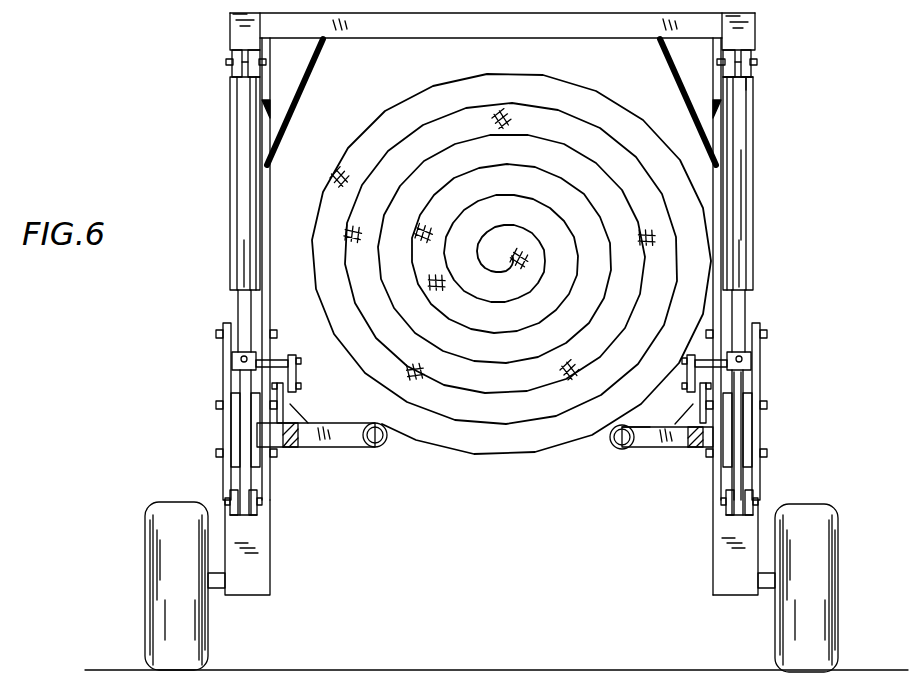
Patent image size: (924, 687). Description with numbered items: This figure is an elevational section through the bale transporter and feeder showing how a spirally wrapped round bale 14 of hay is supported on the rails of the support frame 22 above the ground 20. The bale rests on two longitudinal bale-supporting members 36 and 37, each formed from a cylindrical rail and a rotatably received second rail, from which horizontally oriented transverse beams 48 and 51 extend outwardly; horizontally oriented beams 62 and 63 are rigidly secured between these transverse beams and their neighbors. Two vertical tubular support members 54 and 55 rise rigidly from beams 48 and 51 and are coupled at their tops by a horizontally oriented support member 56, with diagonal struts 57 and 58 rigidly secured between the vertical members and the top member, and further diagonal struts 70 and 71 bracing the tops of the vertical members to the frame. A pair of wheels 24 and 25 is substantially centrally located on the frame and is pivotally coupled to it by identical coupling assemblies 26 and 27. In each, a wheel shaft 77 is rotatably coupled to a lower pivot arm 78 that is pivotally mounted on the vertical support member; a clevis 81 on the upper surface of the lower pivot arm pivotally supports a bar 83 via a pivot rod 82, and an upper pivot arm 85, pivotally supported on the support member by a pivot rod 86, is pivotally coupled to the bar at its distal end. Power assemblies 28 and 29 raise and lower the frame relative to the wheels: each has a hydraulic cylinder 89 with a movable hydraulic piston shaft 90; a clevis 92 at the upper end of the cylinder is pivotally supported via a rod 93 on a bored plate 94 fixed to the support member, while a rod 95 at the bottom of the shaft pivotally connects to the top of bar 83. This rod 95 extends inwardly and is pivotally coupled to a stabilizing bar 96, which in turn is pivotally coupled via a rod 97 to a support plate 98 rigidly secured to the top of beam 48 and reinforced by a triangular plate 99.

The bale 14 is at (595, 90).
The ground 20 is at (495, 666).
The support frame 22 is at (760, 46).
The wheel 24 is at (846, 523).
The wheel 25 is at (138, 522).
The coupling assembly 26 is at (782, 407).
The coupling assembly 27 is at (200, 415).
The power assembly 28 is at (766, 148).
The power assembly 29 is at (227, 138).
The bale-supporting member 36 is at (614, 453).
The bale-supporting member 37 is at (377, 450).
The transverse beam 48 is at (659, 448).
The transverse beam 51 is at (333, 448).
The support member 54 is at (757, 61).
The support member 55 is at (230, 34).
The horizontally oriented support member 56 is at (573, 36).
The diagonal strut 57 is at (686, 96).
The diagonal strut 58 is at (303, 101).
The horizontally oriented beam 62 is at (680, 448).
The horizontally oriented beam 63 is at (300, 448).
The diagonal strut 70 is at (712, 86).
The diagonal strut 71 is at (271, 77).
The wheel shaft 77 is at (770, 593).
The lower pivot arm 78 is at (722, 577).
The clevis 81 is at (732, 517).
The pivot rod 82 is at (755, 502).
The bar 83 is at (745, 482).
The upper pivot arm 85 is at (761, 377).
The pivot rod 86 is at (768, 335).
The hydraulic cylinder 89 is at (740, 210).
The hydraulic piston shaft 90 is at (740, 307).
The clevis 92 is at (752, 78).
The rod 93 is at (757, 68).
The plate 94 is at (737, 60).
The rod 95 is at (706, 356).
The stabilizing bar 96 is at (699, 390).
The rod 97 is at (687, 386).
The support plate 98 is at (696, 403).
The triangular plate 99 is at (650, 426).